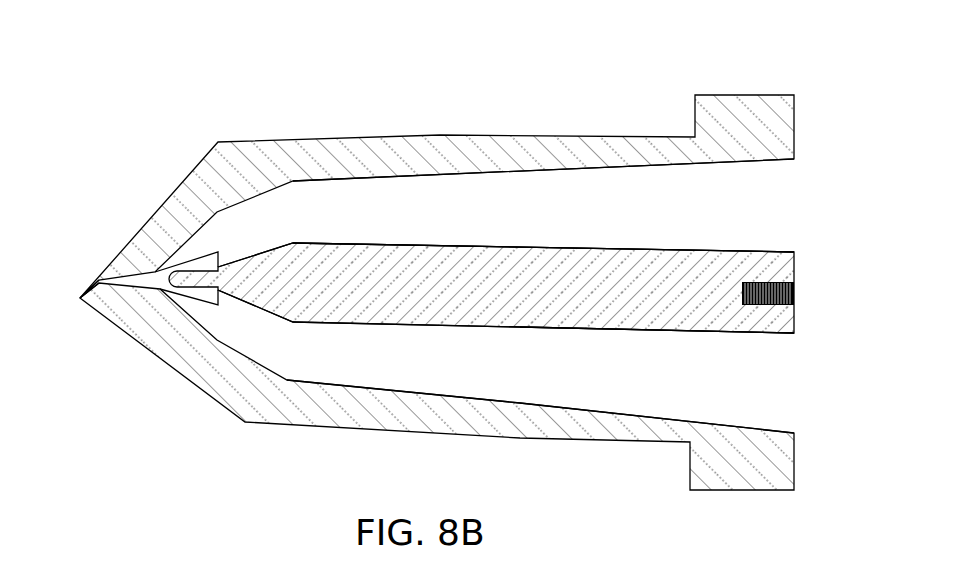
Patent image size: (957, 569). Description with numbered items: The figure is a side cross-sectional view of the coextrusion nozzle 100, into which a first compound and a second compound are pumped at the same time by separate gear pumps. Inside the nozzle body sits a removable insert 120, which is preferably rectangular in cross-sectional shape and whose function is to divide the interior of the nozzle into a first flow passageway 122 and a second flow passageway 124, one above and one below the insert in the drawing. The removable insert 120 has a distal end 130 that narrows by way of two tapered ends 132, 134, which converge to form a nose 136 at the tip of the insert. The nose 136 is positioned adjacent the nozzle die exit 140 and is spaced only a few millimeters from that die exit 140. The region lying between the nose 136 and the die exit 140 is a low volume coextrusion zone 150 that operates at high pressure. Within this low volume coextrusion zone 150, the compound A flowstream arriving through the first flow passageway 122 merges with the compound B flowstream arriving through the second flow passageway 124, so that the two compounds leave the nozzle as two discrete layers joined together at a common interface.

The coextrusion nozzle 100 is at (461, 261).
The removable insert 120 is at (507, 296).
The first flow passageway 122 is at (783, 208).
The second flow passageway 124 is at (783, 383).
The distal end 130 is at (147, 212).
The tapered end 132 is at (270, 247).
The tapered end 134 is at (268, 312).
The nose 136 is at (203, 272).
The nozzle die exit 140 is at (112, 275).
The low volume coextrusion zone 150 is at (160, 290).